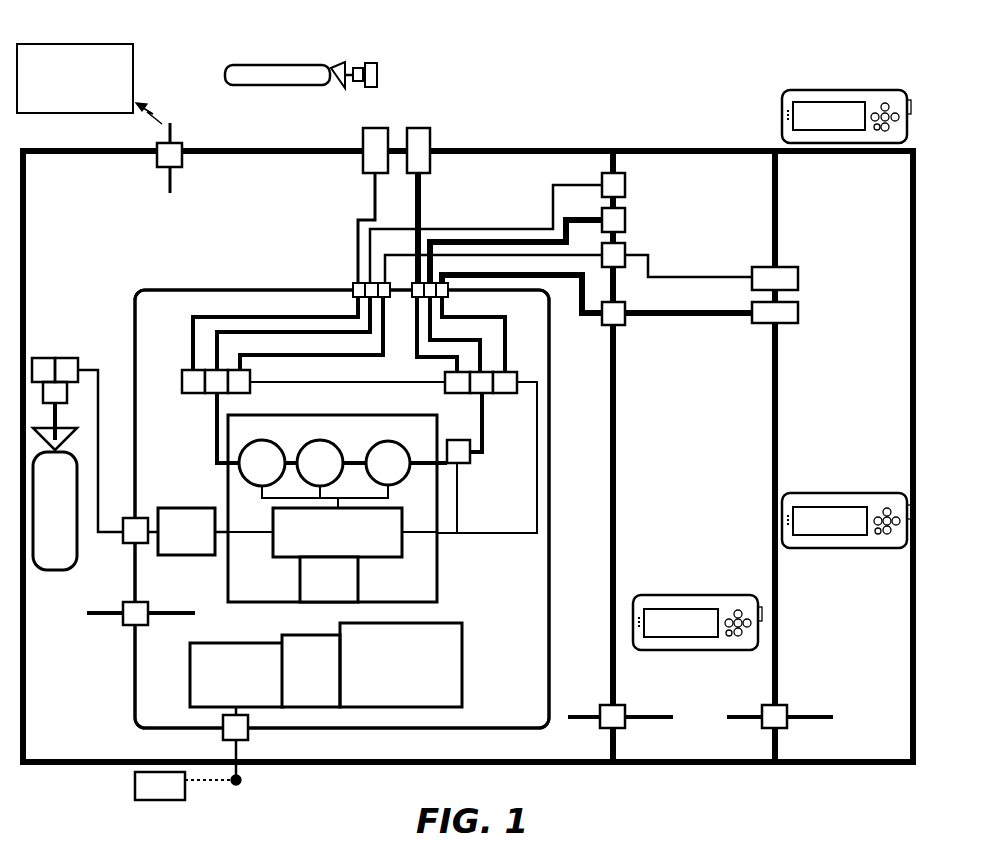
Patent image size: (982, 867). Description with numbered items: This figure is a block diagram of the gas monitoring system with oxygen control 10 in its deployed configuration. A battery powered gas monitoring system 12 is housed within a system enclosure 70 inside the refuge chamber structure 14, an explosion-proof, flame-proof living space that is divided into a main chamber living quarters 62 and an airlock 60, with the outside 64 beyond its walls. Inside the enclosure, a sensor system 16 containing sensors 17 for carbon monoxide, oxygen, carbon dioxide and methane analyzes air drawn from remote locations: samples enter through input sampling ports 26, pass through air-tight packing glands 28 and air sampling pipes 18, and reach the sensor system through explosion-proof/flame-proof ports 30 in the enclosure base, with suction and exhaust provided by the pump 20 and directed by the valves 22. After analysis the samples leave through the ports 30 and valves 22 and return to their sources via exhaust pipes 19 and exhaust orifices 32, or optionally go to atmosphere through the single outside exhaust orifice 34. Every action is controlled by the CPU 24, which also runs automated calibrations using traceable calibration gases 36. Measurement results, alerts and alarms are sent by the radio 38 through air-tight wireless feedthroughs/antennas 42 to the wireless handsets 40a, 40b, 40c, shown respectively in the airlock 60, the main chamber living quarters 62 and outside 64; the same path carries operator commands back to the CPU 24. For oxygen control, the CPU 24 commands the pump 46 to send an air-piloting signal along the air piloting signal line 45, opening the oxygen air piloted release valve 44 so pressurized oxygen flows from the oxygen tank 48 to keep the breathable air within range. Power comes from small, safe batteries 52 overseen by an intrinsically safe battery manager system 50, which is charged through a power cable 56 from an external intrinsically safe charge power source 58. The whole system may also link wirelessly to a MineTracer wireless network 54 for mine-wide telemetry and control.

The gas monitoring system with oxygen control 10 is at (912, 102).
The battery powered gas monitoring system 12 is at (120, 316).
The refuge chamber structure 14 is at (66, 151).
The sensor system 16 is at (406, 415).
The sensors 17 is at (380, 441).
The air sampling pipes 18 is at (375, 200).
The exhaust pipes 19 is at (420, 205).
The pump 20 is at (462, 465).
The valves 22 is at (200, 393).
The CPU 24 is at (402, 545).
The input sampling ports 26 is at (368, 128).
The air-tight packing glands 28 is at (363, 150).
The explosion-proof/flame-proof ports 30 is at (412, 290).
The exhaust orifices 32 is at (625, 218).
The outside exhaust orifice 34 is at (420, 128).
The calibration gases 36 is at (290, 85).
The radio 38 is at (358, 585).
The wireless handset 40a is at (830, 493).
The wireless handset 40b is at (680, 595).
The wireless handset 40c is at (830, 90).
The air-tight wireless feedthroughs/antennas 42 is at (165, 128).
The oxygen air piloted release valve 44 is at (64, 358).
The air piloting signal line 45 is at (99, 420).
The pump 46 is at (195, 555).
The oxygen tank 48 is at (62, 570).
The battery manager system 50 is at (302, 643).
The batteries 52 is at (462, 660).
The MineTracer wireless network 54 is at (133, 78).
The power cable 56 is at (241, 780).
The external intrinsically safe charge power source 58 is at (135, 786).
The airlock 60 is at (868, 762).
The main chamber living quarters 62 is at (715, 762).
The outside 64 is at (90, 742).
The system enclosure 70 is at (135, 290).